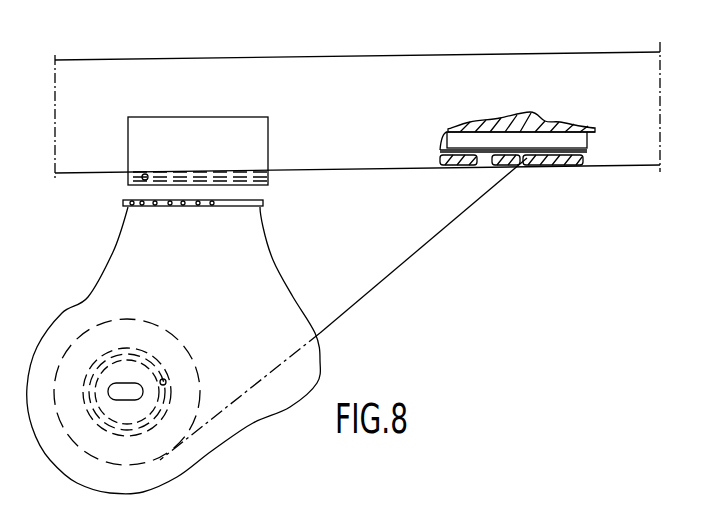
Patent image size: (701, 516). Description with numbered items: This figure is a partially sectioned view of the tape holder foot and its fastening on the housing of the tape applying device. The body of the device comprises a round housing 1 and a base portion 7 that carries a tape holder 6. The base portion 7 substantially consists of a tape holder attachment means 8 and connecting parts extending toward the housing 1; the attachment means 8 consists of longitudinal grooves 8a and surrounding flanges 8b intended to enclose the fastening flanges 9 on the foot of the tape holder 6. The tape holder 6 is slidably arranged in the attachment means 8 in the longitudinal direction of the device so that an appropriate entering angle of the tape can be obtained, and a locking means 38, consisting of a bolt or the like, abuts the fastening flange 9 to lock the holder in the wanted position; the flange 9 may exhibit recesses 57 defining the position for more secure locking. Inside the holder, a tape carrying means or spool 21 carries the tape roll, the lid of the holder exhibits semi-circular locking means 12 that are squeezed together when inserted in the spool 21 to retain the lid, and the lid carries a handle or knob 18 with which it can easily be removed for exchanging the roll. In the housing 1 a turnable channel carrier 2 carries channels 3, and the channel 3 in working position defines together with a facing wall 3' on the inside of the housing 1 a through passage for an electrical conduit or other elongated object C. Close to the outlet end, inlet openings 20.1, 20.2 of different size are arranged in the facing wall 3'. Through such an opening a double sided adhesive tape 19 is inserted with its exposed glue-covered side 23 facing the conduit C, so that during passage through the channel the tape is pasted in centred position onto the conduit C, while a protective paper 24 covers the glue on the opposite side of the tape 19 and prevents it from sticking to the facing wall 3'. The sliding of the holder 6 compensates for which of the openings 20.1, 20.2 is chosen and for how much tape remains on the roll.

The round housing 1 is at (418, 62).
The channel carrier 2 is at (487, 124).
The channel 3 is at (575, 117).
The facing wall 3' is at (426, 139).
The electrical conduit C is at (577, 138).
The tape holder 6 is at (222, 443).
The base portion 7 is at (256, 113).
The tape holder attachment means 8 is at (125, 181).
The longitudinal grooves 8a is at (268, 180).
The surrounding flanges 8b is at (263, 188).
The fastening flanges 9 is at (147, 208).
The semi-circular locking means 12 is at (192, 368).
The handle or knob 18 is at (117, 388).
The double sided adhesive tape 19 is at (144, 320).
The inlet opening 20.1 is at (526, 161).
The inlet opening 20.2 is at (482, 165).
The tape carrying means or spool 21 is at (158, 357).
The exposed glue-covered side 23 is at (384, 278).
The protective paper 24 is at (410, 258).
The locking means 38 is at (146, 174).
The recesses 57 is at (213, 208).